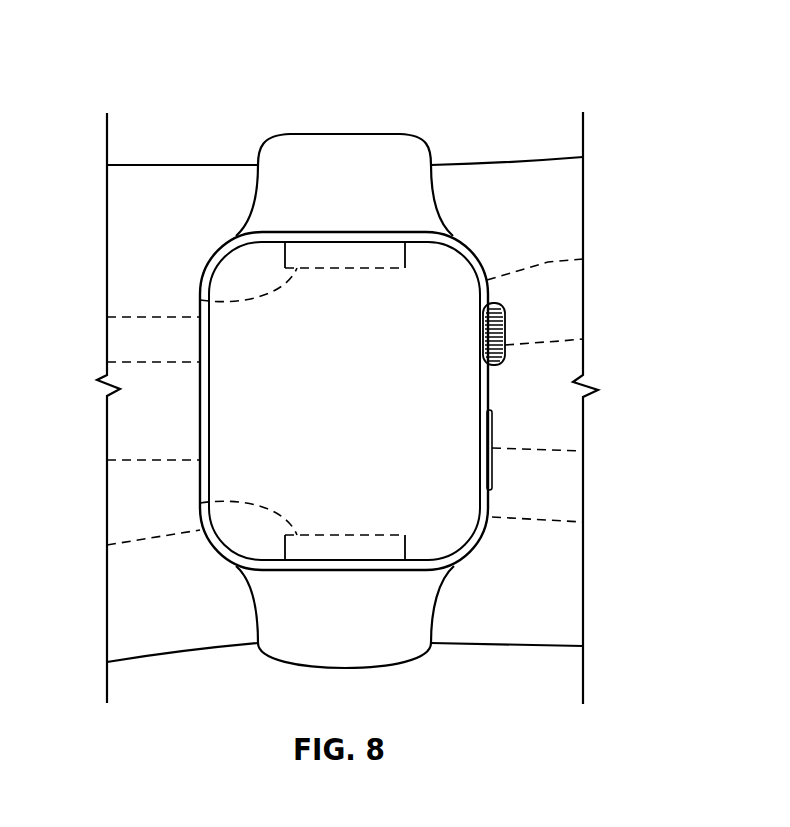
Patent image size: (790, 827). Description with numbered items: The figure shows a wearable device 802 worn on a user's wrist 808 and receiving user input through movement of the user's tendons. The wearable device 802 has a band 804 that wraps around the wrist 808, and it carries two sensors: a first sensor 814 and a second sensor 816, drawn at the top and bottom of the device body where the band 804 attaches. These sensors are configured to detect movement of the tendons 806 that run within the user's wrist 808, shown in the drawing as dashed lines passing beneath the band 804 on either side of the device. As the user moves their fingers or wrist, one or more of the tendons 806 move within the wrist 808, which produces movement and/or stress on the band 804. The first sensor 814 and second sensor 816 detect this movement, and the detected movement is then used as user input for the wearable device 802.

The wearable device 802 is at (322, 100).
The band 804 is at (432, 155).
The tendons 806 is at (545, 265).
The user's wrist 808 is at (180, 165).
The first sensor 814 is at (200, 300).
The second sensor 816 is at (200, 503).